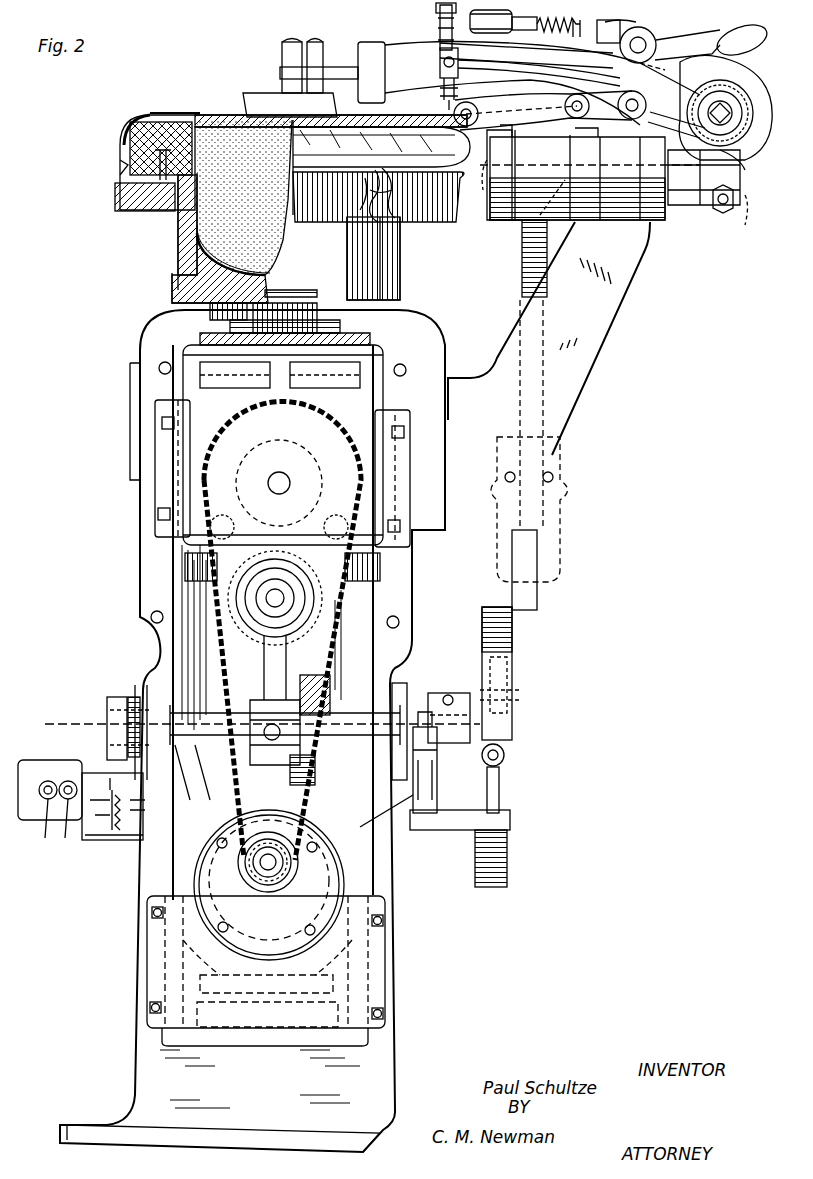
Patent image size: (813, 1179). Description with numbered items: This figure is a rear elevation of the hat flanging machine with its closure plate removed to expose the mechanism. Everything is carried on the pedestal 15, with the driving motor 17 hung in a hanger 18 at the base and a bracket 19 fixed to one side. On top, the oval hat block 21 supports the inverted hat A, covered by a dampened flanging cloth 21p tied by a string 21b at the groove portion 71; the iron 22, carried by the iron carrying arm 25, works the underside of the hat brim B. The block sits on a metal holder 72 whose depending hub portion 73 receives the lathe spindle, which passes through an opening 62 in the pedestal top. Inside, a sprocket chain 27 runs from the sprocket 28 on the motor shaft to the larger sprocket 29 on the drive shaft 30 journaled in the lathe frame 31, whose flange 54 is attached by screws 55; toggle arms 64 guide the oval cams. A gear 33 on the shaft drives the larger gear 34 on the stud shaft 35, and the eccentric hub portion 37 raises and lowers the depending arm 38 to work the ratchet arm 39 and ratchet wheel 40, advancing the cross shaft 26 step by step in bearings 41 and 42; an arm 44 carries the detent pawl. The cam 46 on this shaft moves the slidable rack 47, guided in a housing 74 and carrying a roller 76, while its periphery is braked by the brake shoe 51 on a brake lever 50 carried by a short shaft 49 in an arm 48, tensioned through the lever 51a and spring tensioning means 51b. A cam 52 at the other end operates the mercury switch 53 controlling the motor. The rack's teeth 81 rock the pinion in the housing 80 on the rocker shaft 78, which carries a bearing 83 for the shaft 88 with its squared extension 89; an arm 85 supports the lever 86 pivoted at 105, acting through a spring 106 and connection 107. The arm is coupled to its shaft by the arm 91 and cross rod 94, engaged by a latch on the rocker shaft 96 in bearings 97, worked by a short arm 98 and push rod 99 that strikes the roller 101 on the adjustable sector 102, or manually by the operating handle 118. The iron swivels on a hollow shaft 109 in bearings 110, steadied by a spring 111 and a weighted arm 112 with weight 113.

The pedestal 15 is at (150, 562).
The driving motor 17 is at (269, 885).
The hanger 18 is at (266, 971).
The bracket 19 is at (549, 338).
The hat block 21 is at (178, 115).
The flanging cloth 21p is at (160, 113).
The string 21b is at (125, 168).
The iron 22 is at (300, 78).
The iron carrying arm 25 is at (540, 30).
The cross shaft 26 is at (192, 772).
The sprocket chain 27 is at (300, 822).
The sprocket 28 is at (290, 875).
The sprocket 29 is at (357, 488).
The drive shaft 30 is at (281, 482).
The lathe frame 31 is at (372, 410).
The gear 33 is at (300, 460).
The gear 34 is at (315, 630).
The stud shaft 35 is at (284, 595).
The eccentric hub portion 37 is at (300, 612).
The depending arm 38 is at (300, 665).
The ratchet arm 39 is at (265, 760).
The ratchet wheel 40 is at (330, 693).
The bearing 41 is at (148, 685).
The tubular bearing 42 is at (405, 690).
The arm 44 is at (315, 778).
The cam 46 is at (512, 720).
The slidable rack 47 is at (522, 278).
The arm 48 is at (456, 684).
The short shaft 49 is at (512, 820).
The brake lever 50 is at (500, 792).
The brake shoe 51 is at (505, 760).
The lever 51a is at (422, 815).
The spring tensioning means 51b is at (371, 818).
The cam 52 is at (107, 713).
The mercury switch 53 is at (45, 760).
The flange 54 is at (165, 462).
The screws 55 is at (162, 423).
The opening 62 is at (345, 325).
The toggle arm 64 is at (282, 503).
The groove portion 71 is at (125, 190).
The metal holder 72 is at (172, 243).
The hub portion 73 is at (325, 292).
The housing 74 is at (540, 555).
The roller 76 is at (510, 690).
The rocker shaft 78 is at (613, 198).
The housing 80 is at (655, 222).
The teeth 81 is at (522, 245).
The bearing 83 is at (745, 72).
The arm 85 is at (495, 222).
The lever 86 is at (550, 108).
The shaft 88 is at (735, 140).
The squared extension 89 is at (738, 175).
The arm 91 is at (676, 123).
The cross rod 94 is at (600, 86).
The rocker shaft 96 is at (680, 50).
The bearings 97 is at (656, 40).
The short arm 98 is at (636, 22).
The push rod 99 is at (608, 40).
The roller 101 is at (622, 220).
The adjustable sector 102 is at (605, 150).
The pivot 105 is at (539, 73).
The spring 106 is at (440, 30).
The connection 107 is at (529, 84).
The hollow shaft 109 is at (440, 94).
The bearings 110 is at (455, 110).
The spring 111 is at (526, 43).
The arm 112 is at (505, 32).
The weight 113 is at (436, 10).
The operating handle 118 is at (735, 28).
The hat A is at (230, 200).
The hat brim B is at (120, 140).